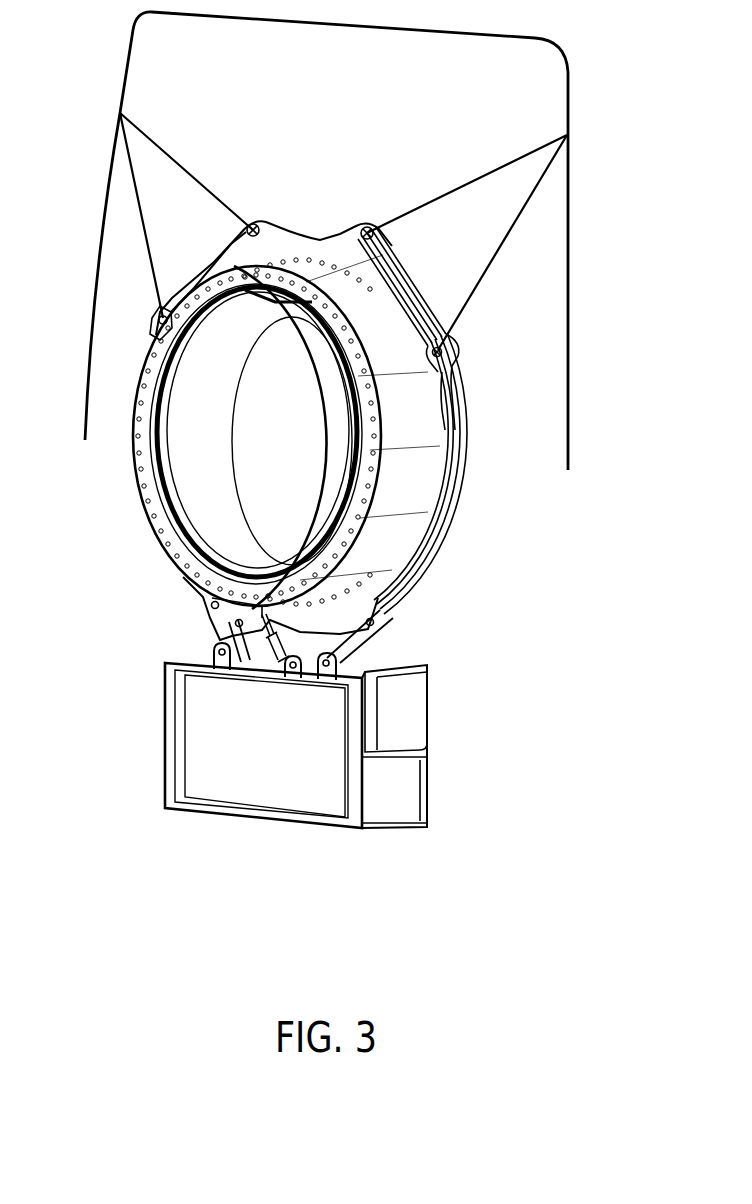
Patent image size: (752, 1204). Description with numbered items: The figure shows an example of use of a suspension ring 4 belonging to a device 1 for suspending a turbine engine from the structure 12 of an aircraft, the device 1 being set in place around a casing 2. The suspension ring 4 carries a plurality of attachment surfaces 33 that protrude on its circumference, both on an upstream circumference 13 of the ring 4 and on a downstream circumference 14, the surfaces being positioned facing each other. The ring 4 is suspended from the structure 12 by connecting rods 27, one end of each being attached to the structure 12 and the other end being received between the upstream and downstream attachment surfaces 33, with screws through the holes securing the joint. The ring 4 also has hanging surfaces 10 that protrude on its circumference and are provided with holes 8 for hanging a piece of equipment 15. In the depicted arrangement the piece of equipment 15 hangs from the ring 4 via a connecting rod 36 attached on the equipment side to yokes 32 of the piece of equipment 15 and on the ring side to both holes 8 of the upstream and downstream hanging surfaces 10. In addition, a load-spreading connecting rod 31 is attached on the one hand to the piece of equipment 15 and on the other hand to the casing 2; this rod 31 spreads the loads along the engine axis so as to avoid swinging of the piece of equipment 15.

The device 1 is at (498, 533).
The casing 2 is at (133, 347).
The suspension ring 4 is at (398, 277).
The holes 8 is at (227, 623).
The hanging surfaces 10 is at (200, 593).
The structure 12 is at (573, 298).
The upstream circumference 13 is at (443, 418).
The downstream circumference 14 is at (430, 313).
The piece of equipment 15 is at (430, 775).
The connecting rods 27 is at (137, 212).
The load-spreading connecting rod 31 is at (258, 648).
The yokes 32 is at (213, 660).
The attachment surfaces 33 is at (253, 217).
The connecting rod 36 is at (215, 637).